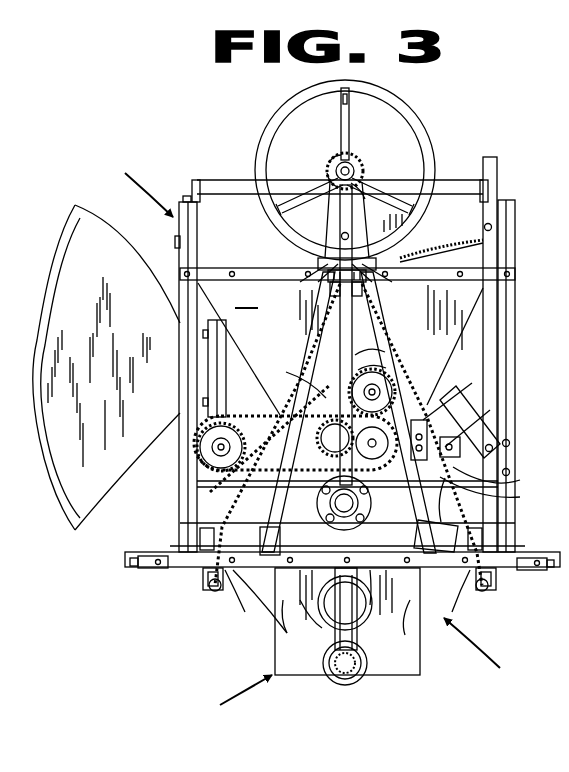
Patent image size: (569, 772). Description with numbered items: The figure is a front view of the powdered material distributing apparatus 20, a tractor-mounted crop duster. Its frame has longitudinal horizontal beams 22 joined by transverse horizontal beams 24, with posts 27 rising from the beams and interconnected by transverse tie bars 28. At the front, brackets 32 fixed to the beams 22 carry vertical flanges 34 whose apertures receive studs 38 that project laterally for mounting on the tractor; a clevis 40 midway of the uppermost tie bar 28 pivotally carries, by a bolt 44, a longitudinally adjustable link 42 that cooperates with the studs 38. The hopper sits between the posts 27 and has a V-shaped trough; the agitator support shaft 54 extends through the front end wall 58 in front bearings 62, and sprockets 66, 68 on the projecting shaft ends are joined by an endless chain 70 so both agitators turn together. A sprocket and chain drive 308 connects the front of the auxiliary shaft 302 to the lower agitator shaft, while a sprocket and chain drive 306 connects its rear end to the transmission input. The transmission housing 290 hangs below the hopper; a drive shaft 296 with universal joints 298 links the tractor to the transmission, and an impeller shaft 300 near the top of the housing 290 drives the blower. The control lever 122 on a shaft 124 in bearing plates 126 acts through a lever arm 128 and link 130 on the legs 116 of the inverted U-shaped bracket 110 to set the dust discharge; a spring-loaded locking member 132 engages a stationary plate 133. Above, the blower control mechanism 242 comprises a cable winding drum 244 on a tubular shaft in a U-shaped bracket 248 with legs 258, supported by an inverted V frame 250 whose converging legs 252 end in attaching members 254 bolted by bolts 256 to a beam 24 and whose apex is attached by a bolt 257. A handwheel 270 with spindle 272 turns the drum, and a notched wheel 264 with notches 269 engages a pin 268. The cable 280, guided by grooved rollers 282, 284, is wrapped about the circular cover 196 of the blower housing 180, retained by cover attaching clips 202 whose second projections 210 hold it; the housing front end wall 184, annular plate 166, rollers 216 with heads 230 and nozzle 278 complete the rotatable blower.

The powdered material distributing apparatus 20 is at (174, 166).
The horizontal beams 22 is at (178, 545).
The transverse horizontal beams 24 is at (372, 582).
The posts 27 is at (178, 243).
The transverse tie bars 28 is at (185, 273).
The brackets 32 is at (143, 558).
The vertical flange 34 is at (203, 575).
The studs 38 is at (140, 562).
The clevis 40 is at (333, 288).
The longitudinally adjustable link 42 is at (340, 330).
The bolt 44 is at (360, 288).
The support shaft 54 is at (370, 390).
The front end wall 58 is at (466, 305).
The front bearings 62 is at (322, 386).
The sprocket 66 is at (386, 368).
The sprocket 68 is at (356, 502).
The endless chain 70 is at (385, 355).
The inverted U-shaped bracket 110 is at (432, 388).
The legs 116 is at (267, 403).
The control lever 122 is at (492, 165).
The elongated shaft 124 is at (492, 446).
The bearing plates 126 is at (509, 445).
The lever arm 128 is at (462, 420).
The link 130 is at (470, 400).
The spring-loaded locking member 132 is at (491, 225).
The stationary plate 133 is at (494, 267).
The annular plate 166 is at (443, 505).
The volute-shaped housing 180 is at (476, 392).
The front end wall 184 is at (268, 610).
The circular cover 196 is at (480, 484).
The cover attaching clips 202 is at (460, 455).
The second projection 210 is at (478, 440).
The roller 216 is at (435, 612).
The head 230 is at (284, 570).
The blower control mechanism 242 is at (431, 113).
The cable winding drum 244 is at (357, 162).
The U-shaped bracket 248 is at (342, 218).
The frame of inverted V-shape 250 is at (302, 276).
The converging legs 252 is at (310, 322).
The attaching members 254 is at (252, 596).
The bolts 256 is at (258, 536).
The bolt 257 is at (341, 237).
The legs 258 is at (342, 208).
The notched wheel 264 is at (329, 174).
The pin 268 is at (364, 186).
The notches 269 is at (329, 162).
The handwheel 270 is at (264, 124).
The spindle 272 is at (362, 168).
The nozzle 278 is at (53, 225).
The cable 280 is at (200, 509).
The grooved rollers 282 is at (205, 533).
The grooved rollers 284 is at (213, 586).
The transmission housing 290 is at (393, 677).
The drive shaft 296 is at (355, 630).
The universal joints 298 is at (334, 683).
The impeller shaft 300 is at (332, 510).
The auxiliary shaft 302 is at (200, 447).
The sprocket and chain drive 306 is at (200, 488).
The sprocket and chain drive 308 is at (198, 458).